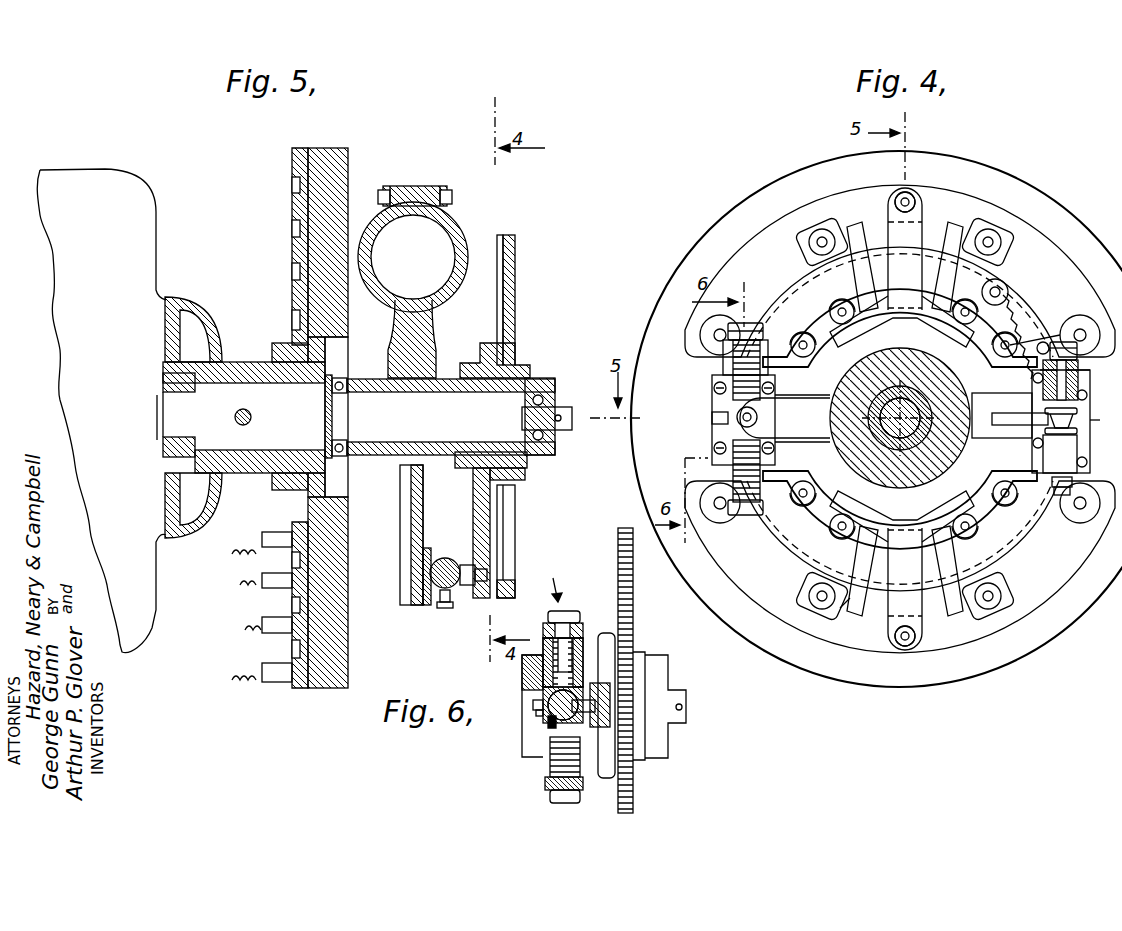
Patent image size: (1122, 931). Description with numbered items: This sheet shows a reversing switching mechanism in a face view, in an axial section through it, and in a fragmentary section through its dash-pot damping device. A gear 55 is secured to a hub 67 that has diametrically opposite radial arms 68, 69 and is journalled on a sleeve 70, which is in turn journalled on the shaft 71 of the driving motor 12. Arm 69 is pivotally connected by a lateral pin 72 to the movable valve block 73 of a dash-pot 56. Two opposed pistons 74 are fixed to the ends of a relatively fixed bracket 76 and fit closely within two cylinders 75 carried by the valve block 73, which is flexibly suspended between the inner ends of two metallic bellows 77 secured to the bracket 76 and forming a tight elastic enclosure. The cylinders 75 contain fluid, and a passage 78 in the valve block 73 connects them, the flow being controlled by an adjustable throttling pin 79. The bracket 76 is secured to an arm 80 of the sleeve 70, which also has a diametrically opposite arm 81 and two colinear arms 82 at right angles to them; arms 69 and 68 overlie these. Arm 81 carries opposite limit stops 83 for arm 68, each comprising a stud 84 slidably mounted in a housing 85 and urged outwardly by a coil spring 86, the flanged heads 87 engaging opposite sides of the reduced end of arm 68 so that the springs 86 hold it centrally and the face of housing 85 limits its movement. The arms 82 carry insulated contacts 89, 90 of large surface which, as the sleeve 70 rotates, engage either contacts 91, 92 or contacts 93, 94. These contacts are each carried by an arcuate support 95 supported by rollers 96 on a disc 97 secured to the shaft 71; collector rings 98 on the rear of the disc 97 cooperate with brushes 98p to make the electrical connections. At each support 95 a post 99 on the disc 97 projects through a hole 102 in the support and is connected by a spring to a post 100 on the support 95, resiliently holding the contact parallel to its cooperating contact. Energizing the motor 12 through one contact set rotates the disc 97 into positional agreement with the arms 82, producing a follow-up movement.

In FIG. 5, the driving motor 12 is at (140, 578).
In FIG. 5, the gear 55 is at (515, 565).
In FIG. 6, the gear 55 is at (636, 595).
In FIG. 6, the dash-pot 56 is at (565, 581).
In FIG. 5, the hub 67 is at (492, 358).
In FIG. 6, the hub 67 is at (612, 778).
In FIG. 4, the hub 67 is at (830, 425).
In FIG. 4, the radial arm 68 is at (990, 435).
In FIG. 5, the radial arm 69 is at (472, 490).
In FIG. 6, the radial arm 69 is at (612, 676).
In FIG. 4, the radial arm 69 is at (816, 395).
In FIG. 5, the sleeve 70 is at (380, 456).
In FIG. 4, the sleeve 70 is at (880, 437).
In FIG. 5, the shaft 71 is at (255, 445).
In FIG. 4, the shaft 71 is at (880, 395).
In FIG. 5, the lateral pin 72 is at (466, 590).
In FIG. 6, the lateral pin 72 is at (596, 718).
In FIG. 4, the lateral pin 72 is at (758, 417).
In FIG. 5, the movable valve block 73 is at (450, 558).
In FIG. 6, the movable valve block 73 is at (560, 698).
In FIG. 6, the pistons 74 is at (550, 795).
In FIG. 4, the pistons 74 is at (765, 508).
In FIG. 6, the cylinders 75 is at (560, 735).
In FIG. 5, the bracket 76 is at (426, 606).
In FIG. 6, the bracket 76 is at (545, 632).
In FIG. 4, the bracket 76 is at (712, 340).
In FIG. 6, the metallic bellows 77 is at (555, 768).
In FIG. 4, the metallic bellows 77 is at (762, 458).
In FIG. 6, the passage 78 is at (552, 722).
In FIG. 5, the adjustable throttling pin 79 is at (444, 608).
In FIG. 6, the adjustable throttling pin 79 is at (533, 706).
In FIG. 4, the adjustable throttling pin 79 is at (712, 420).
In FIG. 5, the arm 80 is at (400, 566).
In FIG. 6, the arm 80 is at (528, 752).
In FIG. 4, the arm 80 is at (712, 432).
In FIG. 4, the arm 81 is at (1015, 470).
In FIG. 5, the colinear arms 82 is at (430, 186).
In FIG. 4, the colinear arms 82 is at (908, 647).
In FIG. 4, the limit stops 83 is at (1078, 452).
In FIG. 4, the stud 84 is at (1080, 410).
In FIG. 4, the housing 85 is at (1043, 390).
In FIG. 4, the coil spring 86 is at (1090, 380).
In FIG. 4, the flanged head 87 is at (1090, 422).
In FIG. 5, the contact 89 is at (448, 235).
In FIG. 4, the contact 89 is at (878, 228).
In FIG. 4, the contact 90 is at (870, 622).
In FIG. 4, the contact 91 is at (852, 232).
In FIG. 4, the contact 92 is at (960, 605).
In FIG. 4, the contact 93 is at (968, 232).
In FIG. 4, the contact 94 is at (845, 605).
In FIG. 4, the arcuate support 95 is at (1035, 530).
In FIG. 4, the rollers 96 is at (1000, 600).
In FIG. 5, the disc 97 is at (328, 690).
In FIG. 4, the disc 97 is at (1040, 196).
In FIG. 5, the collector rings 98 is at (288, 250).
In FIG. 5, the brushes 98p is at (262, 660).
In FIG. 4, the post 99 is at (1020, 312).
In FIG. 4, the post 100 is at (1050, 325).
In FIG. 4, the hole 102 is at (990, 288).